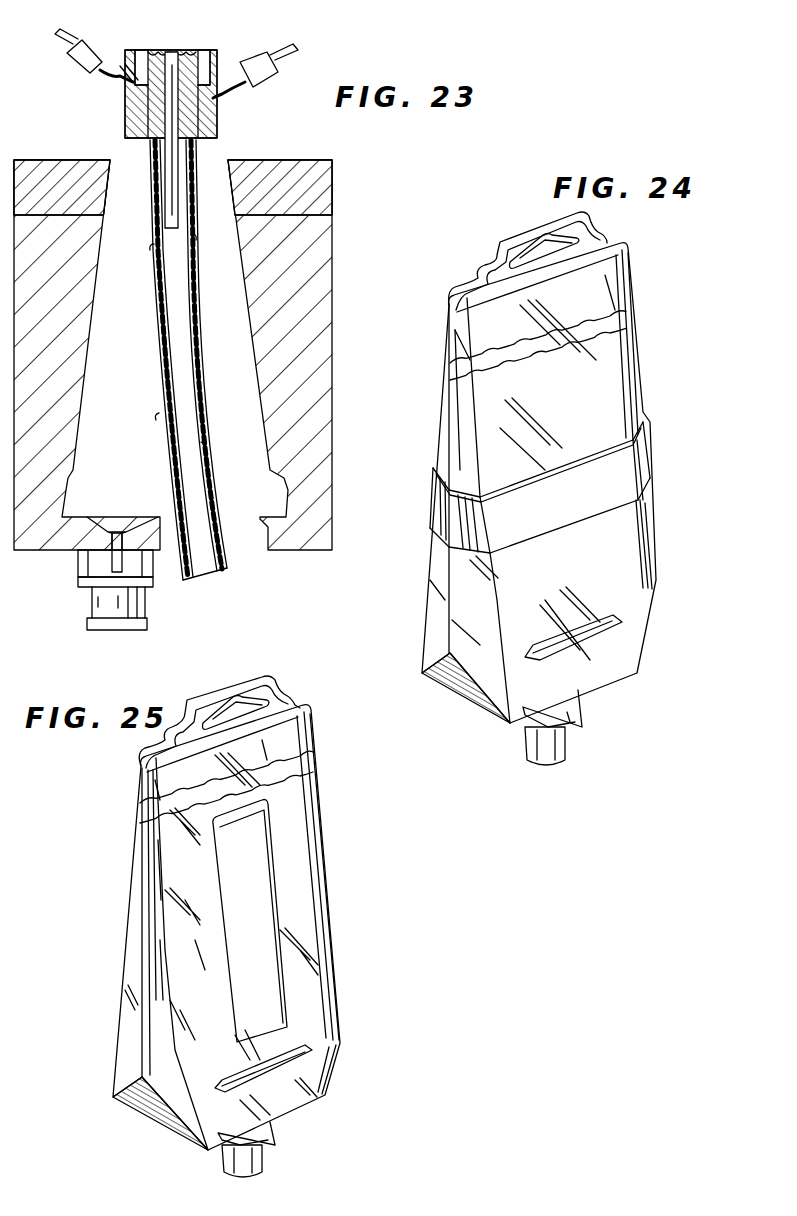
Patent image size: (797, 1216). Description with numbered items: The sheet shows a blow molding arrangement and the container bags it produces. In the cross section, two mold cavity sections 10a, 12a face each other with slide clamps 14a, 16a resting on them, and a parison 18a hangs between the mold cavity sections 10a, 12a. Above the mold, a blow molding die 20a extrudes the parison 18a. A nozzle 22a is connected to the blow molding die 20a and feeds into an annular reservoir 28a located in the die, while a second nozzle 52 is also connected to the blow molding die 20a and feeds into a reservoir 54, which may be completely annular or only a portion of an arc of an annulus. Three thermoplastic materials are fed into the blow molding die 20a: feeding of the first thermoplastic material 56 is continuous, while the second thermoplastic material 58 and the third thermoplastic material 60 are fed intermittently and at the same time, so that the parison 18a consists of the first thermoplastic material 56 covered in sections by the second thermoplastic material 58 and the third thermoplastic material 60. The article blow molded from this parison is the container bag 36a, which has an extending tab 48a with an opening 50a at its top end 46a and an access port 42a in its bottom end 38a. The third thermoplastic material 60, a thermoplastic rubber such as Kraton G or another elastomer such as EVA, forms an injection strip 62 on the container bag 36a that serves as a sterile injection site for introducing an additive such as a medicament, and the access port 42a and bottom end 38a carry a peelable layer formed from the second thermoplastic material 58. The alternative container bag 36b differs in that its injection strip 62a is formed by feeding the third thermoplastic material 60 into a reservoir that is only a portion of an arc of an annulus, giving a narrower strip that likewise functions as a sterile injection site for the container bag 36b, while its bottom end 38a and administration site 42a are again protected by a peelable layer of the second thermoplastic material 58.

In FIG. 23, the mold cavity section 10a is at (70, 365).
In FIG. 23, the mold cavity section 12a is at (306, 360).
In FIG. 23, the slide clamp 14a is at (78, 195).
In FIG. 23, the slide clamp 16a is at (300, 195).
In FIG. 23, the parison 18a is at (220, 582).
In FIG. 23, the blow molding die 20a is at (100, 130).
In FIG. 23, the nozzle 22a is at (270, 78).
In FIG. 23, the annular reservoir 28a is at (218, 92).
In FIG. 23, the second nozzle 52 is at (83, 66).
In FIG. 23, the reservoir 54 is at (160, 50).
In FIG. 23, the first thermoplastic material 56 is at (192, 178).
In FIG. 23, the second thermoplastic material 58 is at (230, 93).
In FIG. 24, the second thermoplastic material 58 is at (586, 708).
In FIG. 25, the second thermoplastic material 58 is at (276, 1126).
In FIG. 23, the third thermoplastic material 60 is at (122, 78).
In FIG. 24, the container bag 36a is at (680, 575).
In FIG. 25, the container bag 36b is at (352, 942).
In FIG. 24, the bottom end 38a is at (642, 698).
In FIG. 25, the bottom end 38a is at (318, 1105).
In FIG. 24, the access port 42a is at (535, 758).
In FIG. 25, the access port 42a is at (225, 1160).
In FIG. 24, the top end 46a is at (448, 296).
In FIG. 24, the extending tab 48a is at (580, 233).
In FIG. 25, the extending tab 48a is at (219, 722).
In FIG. 24, the opening 50a is at (535, 240).
In FIG. 25, the opening 50a is at (236, 713).
In FIG. 24, the injection strip 62 is at (648, 430).
In FIG. 25, the injection strip 62a is at (255, 828).